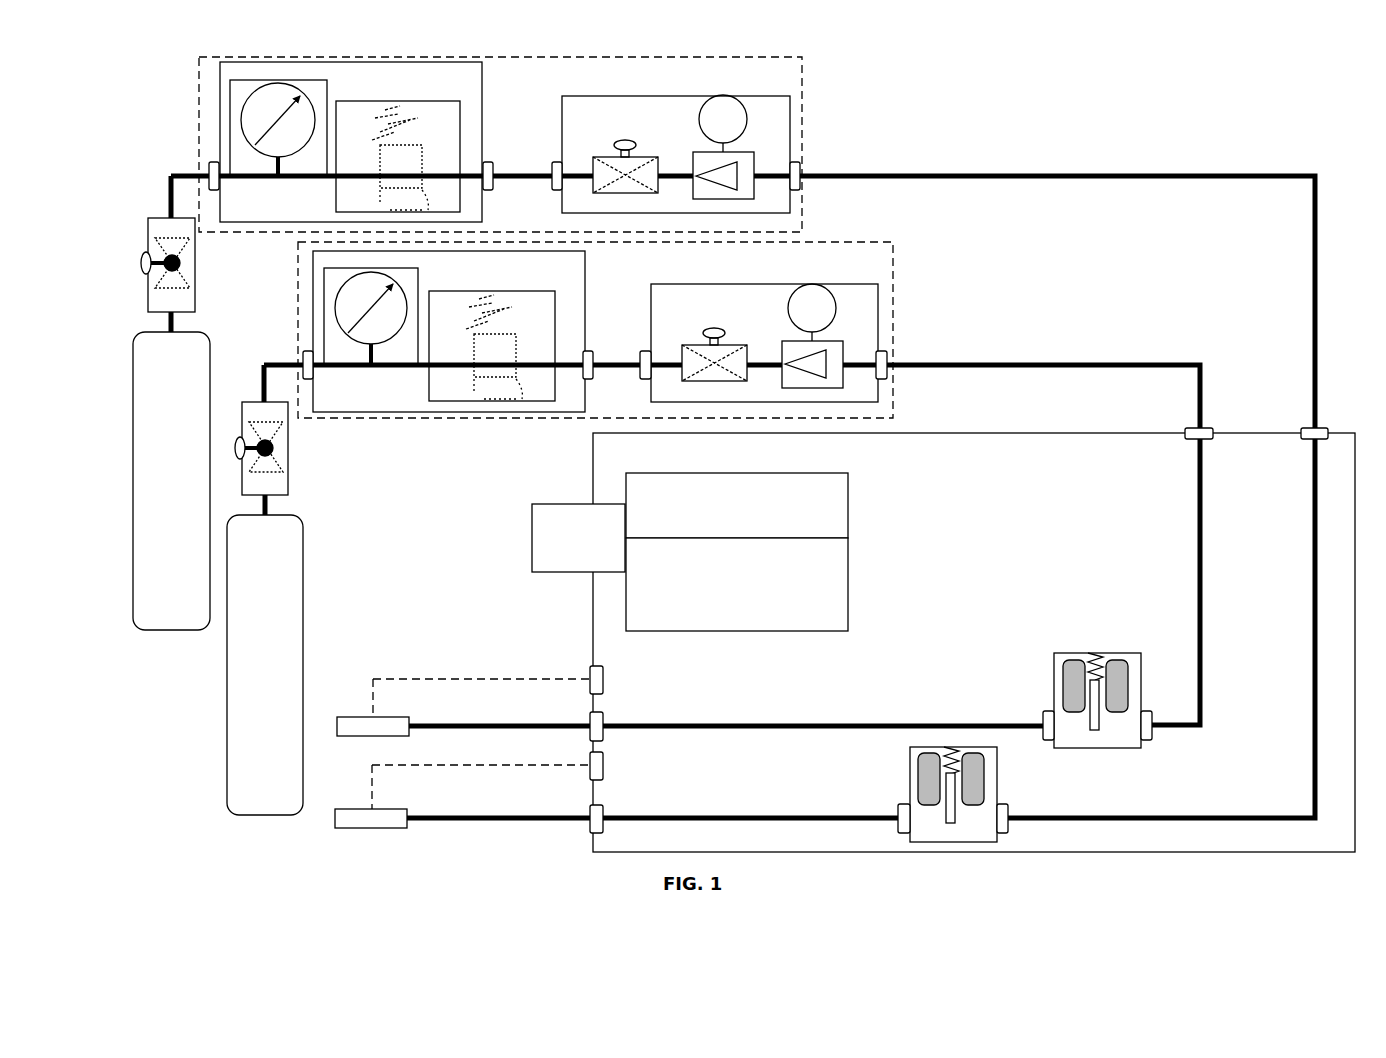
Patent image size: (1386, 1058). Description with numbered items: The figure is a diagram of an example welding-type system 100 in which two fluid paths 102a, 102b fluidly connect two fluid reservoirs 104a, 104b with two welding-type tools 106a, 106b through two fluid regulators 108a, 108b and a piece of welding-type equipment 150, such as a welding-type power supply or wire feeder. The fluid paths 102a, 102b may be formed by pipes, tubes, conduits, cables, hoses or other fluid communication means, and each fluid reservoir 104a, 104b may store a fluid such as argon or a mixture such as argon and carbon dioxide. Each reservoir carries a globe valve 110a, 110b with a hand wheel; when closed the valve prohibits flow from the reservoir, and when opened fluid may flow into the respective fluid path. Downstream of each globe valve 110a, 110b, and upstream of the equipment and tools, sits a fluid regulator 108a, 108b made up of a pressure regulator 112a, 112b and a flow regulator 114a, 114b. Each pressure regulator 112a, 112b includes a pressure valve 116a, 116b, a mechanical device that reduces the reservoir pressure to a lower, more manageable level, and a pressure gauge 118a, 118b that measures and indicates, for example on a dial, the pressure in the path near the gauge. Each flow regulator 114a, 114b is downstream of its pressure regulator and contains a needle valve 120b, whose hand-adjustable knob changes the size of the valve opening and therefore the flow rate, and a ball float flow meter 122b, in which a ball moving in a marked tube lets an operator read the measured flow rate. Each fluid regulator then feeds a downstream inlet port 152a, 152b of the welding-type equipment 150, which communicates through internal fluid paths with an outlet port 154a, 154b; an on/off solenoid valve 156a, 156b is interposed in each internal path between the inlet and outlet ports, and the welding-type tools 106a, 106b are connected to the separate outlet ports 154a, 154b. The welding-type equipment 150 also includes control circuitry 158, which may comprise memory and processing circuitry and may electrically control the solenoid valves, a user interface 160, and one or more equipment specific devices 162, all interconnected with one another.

The welding-type system 100 is at (1308, 127).
The fluid path 102a is at (1147, 165).
The fluid path 102b is at (1130, 358).
The fluid reservoir 104a is at (131, 480).
The fluid reservoir 104b is at (227, 663).
The welding-type tool 106a is at (373, 738).
The welding-type tool 106b is at (370, 832).
The fluid regulator 108a is at (805, 147).
The fluid regulator 108b is at (897, 328).
The globe valve 110a is at (147, 283).
The globe valve 110b is at (290, 448).
The pressure regulator 112a is at (297, 138).
The pressure regulator 112b is at (398, 331).
The flow regulator 114a is at (562, 140).
The flow regulator 114b is at (645, 330).
The pressure valve 116a is at (397, 100).
The pressure valve 116b is at (473, 287).
The pressure gauge 118a is at (228, 127).
The pressure gauge 118b is at (320, 315).
The needle valve 120b is at (645, 150).
The ball float flow meter 122b is at (750, 147).
The welding-type equipment 150 is at (943, 618).
The inlet port 152a is at (1308, 420).
The inlet port 152b is at (1193, 420).
The outlet port 154a is at (610, 807).
The outlet port 154b is at (615, 715).
The on/off solenoid valve 156a is at (905, 790).
The on/off solenoid valve 156b is at (1045, 687).
The control circuitry 158 is at (737, 505).
The user interface 160 is at (578, 538).
The equipment specific devices 162 is at (737, 584).